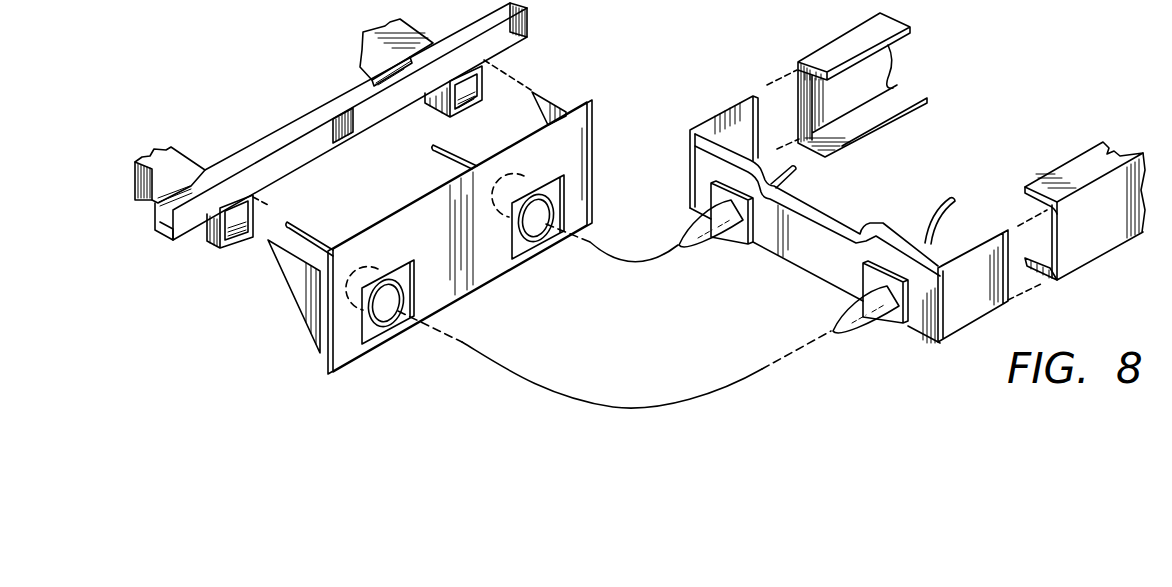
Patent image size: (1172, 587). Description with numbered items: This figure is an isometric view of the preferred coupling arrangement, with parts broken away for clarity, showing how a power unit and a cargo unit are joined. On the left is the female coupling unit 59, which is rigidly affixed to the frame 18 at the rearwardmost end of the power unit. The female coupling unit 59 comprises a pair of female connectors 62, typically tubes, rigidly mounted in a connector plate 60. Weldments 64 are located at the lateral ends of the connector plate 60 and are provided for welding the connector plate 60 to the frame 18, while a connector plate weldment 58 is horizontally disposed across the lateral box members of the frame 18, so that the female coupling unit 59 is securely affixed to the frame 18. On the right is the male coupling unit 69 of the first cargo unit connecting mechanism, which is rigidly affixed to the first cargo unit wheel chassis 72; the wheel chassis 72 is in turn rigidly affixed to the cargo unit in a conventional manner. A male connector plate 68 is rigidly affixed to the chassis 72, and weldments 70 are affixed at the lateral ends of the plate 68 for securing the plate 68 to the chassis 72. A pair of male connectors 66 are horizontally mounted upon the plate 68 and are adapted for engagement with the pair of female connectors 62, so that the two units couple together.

The frame 18 is at (364, 34).
The connector plate weldment 58 is at (528, 19).
The female coupling unit 59 is at (655, 93).
The connector plate 60 is at (584, 118).
The female connectors 62 is at (541, 237).
The weldments 64 is at (543, 100).
The male connectors 66 is at (715, 245).
The male connector plate 68 is at (814, 224).
The male coupling unit 69 is at (901, 332).
The weldments 70 is at (753, 108).
The wheel chassis 72 is at (907, 97).